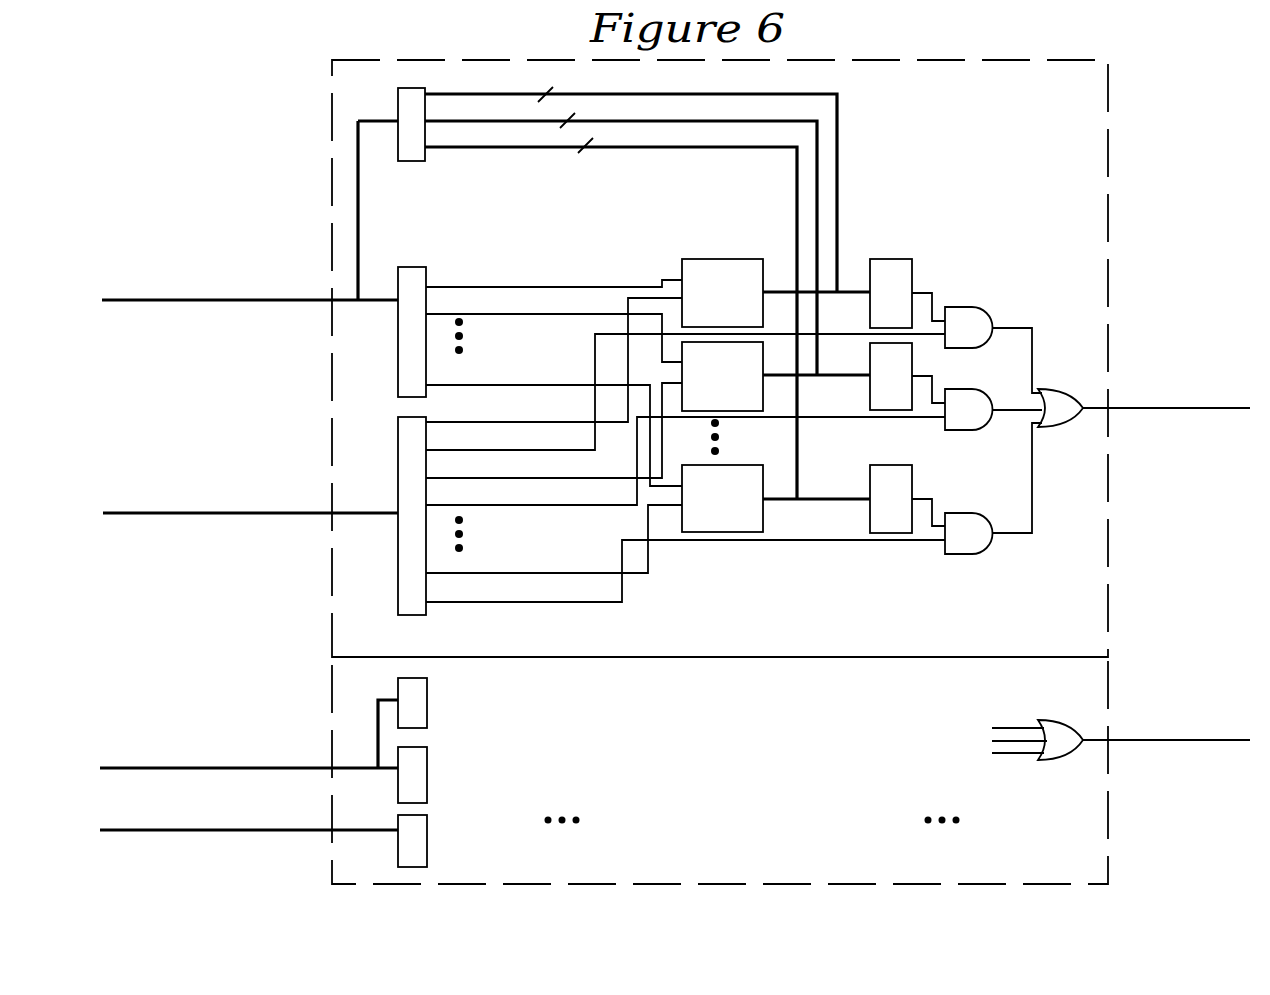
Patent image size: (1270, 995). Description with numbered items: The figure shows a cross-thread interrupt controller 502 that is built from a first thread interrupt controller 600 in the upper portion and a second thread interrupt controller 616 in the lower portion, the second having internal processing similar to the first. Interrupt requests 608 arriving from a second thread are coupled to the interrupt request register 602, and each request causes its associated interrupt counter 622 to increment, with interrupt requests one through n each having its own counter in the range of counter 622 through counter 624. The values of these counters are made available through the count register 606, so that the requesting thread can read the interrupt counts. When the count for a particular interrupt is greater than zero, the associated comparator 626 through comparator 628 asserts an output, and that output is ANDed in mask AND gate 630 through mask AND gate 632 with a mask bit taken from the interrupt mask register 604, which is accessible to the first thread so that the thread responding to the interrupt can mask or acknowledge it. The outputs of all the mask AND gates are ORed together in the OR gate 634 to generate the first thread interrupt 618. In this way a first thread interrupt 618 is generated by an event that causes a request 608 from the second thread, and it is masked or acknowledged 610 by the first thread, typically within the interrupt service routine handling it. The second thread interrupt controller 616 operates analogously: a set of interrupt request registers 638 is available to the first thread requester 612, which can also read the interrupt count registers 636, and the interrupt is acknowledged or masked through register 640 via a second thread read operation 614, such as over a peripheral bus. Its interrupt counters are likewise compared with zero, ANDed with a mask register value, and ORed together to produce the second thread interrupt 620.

The cross-thread interrupt controller 502 is at (240, 83).
The first thread interrupt controller 600 is at (327, 222).
The interrupt request register 602 is at (398, 390).
The interrupt mask register 604 is at (412, 621).
The count register 606 is at (430, 158).
The interrupt requests 608 is at (250, 290).
The mask or acknowledge 610 is at (234, 502).
The first thread requester 612 is at (249, 749).
The second thread read operation 614 is at (233, 847).
The second thread interrupt controller 616 is at (327, 678).
The first thread interrupt 618 is at (1166, 397).
The second thread interrupt 620 is at (1121, 730).
The interrupt counter 622 is at (678, 267).
The interrupt counter 624 is at (675, 527).
The comparator 626 is at (912, 253).
The comparator 628 is at (862, 524).
The mask AND gate 630 is at (980, 300).
The mask AND gate 632 is at (943, 560).
The OR gate 634 is at (1046, 393).
The interrupt count registers 636 is at (427, 683).
The interrupt request registers 638 is at (427, 752).
The acknowledge or mask register 640 is at (427, 820).